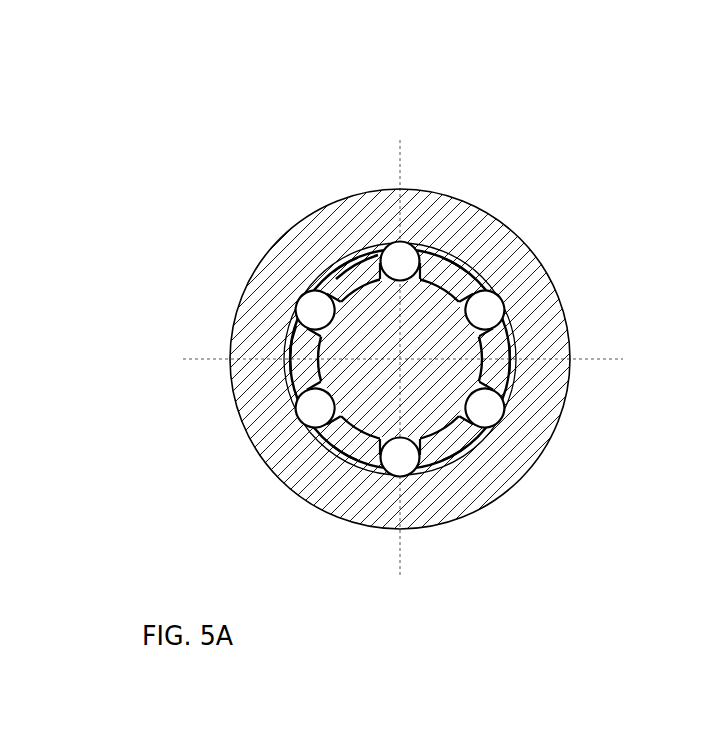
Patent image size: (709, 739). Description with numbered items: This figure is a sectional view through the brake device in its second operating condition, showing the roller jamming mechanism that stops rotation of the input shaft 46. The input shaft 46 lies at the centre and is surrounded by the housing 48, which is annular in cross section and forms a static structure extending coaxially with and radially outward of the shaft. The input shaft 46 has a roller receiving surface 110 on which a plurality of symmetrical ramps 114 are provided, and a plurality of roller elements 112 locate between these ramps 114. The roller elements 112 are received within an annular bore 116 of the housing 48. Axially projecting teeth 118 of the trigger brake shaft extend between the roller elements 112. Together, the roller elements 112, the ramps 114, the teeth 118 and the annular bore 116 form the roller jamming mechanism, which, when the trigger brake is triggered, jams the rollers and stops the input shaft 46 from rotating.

The input shaft 46 is at (368, 402).
The housing 48 is at (530, 268).
The roller receiving surface 110 is at (473, 440).
The roller elements 112 is at (417, 249).
The symmetrical ramps 114 is at (340, 298).
The annular bore 116 is at (450, 262).
The axially projecting teeth 118 is at (358, 262).